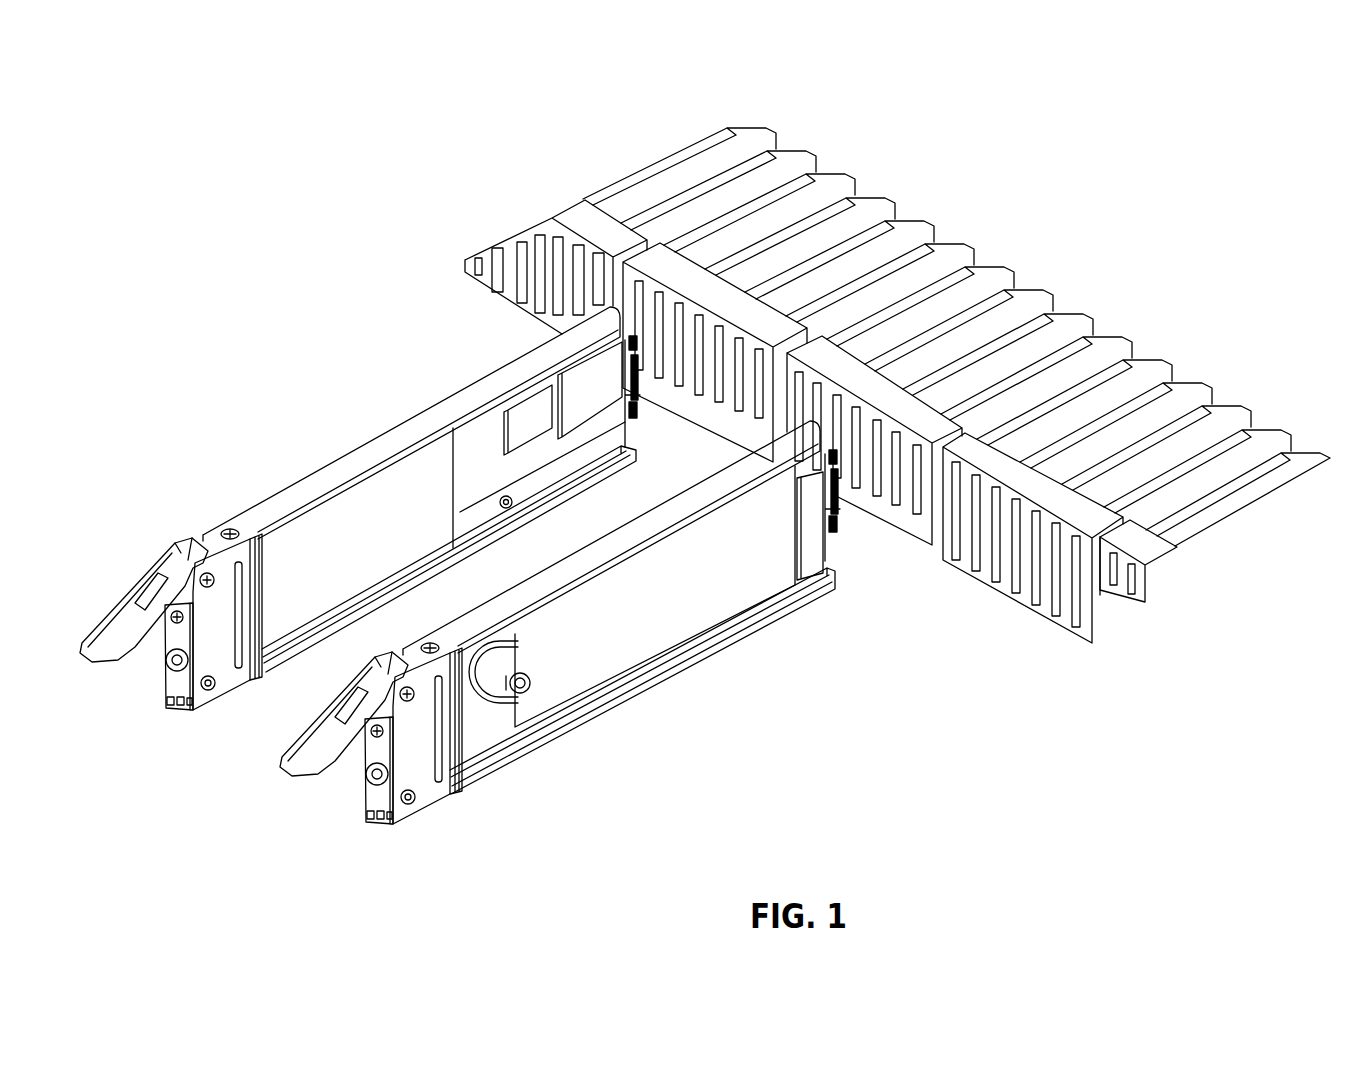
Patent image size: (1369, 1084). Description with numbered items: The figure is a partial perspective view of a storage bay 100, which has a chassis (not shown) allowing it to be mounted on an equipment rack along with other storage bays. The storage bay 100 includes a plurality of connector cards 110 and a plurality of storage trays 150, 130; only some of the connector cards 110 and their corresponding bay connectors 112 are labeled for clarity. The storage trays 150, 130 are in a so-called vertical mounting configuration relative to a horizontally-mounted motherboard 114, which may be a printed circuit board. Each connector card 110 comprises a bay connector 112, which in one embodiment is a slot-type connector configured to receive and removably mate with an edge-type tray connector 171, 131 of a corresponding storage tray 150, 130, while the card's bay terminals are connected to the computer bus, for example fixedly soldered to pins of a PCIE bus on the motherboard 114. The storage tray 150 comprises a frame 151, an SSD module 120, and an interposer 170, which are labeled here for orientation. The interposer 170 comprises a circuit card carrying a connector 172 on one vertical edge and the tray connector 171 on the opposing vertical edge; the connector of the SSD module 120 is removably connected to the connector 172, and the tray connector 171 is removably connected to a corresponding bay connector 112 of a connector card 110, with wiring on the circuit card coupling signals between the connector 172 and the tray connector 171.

The storage bay 100 is at (203, 150).
The connector card 110 is at (753, 128).
The bay connector 112 is at (518, 258).
The motherboard 114 is at (1165, 231).
The SSD module 120 is at (632, 637).
The storage tray 130 is at (245, 480).
The tray connector 131 is at (645, 412).
The storage tray 150 is at (590, 655).
The frame 151 is at (558, 578).
The interposer 170 is at (848, 557).
The tray connector 171 is at (840, 521).
The connector 172 is at (813, 553).